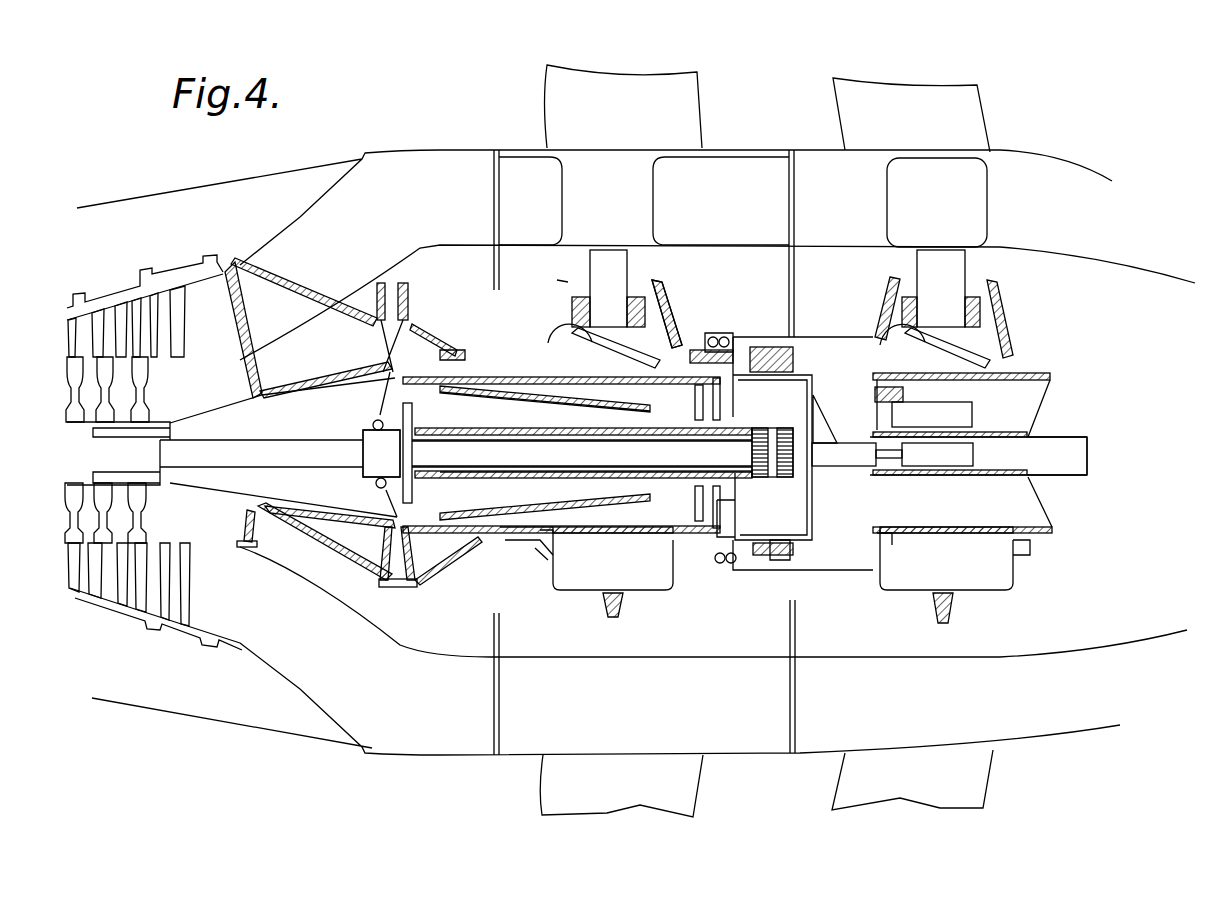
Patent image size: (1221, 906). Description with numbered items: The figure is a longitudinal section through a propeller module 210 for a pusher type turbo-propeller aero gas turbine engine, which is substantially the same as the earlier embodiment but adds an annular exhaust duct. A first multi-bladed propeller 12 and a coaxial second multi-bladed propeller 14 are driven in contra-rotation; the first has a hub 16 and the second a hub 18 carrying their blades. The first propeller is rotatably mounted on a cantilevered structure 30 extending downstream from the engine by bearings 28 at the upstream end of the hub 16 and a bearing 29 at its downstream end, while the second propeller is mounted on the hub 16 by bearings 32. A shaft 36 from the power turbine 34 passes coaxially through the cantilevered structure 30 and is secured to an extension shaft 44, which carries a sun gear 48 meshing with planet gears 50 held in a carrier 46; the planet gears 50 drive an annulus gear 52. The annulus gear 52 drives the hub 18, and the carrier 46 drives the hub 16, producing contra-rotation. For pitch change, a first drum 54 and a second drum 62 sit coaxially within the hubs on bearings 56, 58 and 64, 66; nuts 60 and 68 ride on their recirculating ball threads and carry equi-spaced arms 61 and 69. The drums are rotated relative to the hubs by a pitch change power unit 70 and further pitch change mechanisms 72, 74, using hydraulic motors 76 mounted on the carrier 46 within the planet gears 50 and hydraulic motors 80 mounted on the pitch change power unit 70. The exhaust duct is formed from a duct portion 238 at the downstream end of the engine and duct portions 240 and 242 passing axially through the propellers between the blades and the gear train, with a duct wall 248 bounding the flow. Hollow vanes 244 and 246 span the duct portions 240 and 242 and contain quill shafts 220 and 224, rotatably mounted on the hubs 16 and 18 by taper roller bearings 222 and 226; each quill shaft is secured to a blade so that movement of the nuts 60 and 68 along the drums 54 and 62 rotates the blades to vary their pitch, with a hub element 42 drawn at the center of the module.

The propeller module 210 is at (378, 130).
The first multi-bladed propeller 12 is at (630, 133).
The second multi-bladed propeller 14 is at (928, 133).
The hollow vane 244 is at (630, 215).
The duct portion 240 is at (751, 215).
The hollow vane 246 is at (971, 215).
The duct portion 242 is at (1107, 252).
The duct portion 238 is at (345, 265).
The duct wall 248 is at (1133, 652).
The quill shaft 220 is at (598, 270).
The taper roller bearing 222 is at (637, 357).
The quill shaft 224 is at (957, 277).
The taper roller bearing 226 is at (903, 312).
The power turbine 34 is at (140, 308).
The shaft 36 is at (188, 462).
The bearings 28 is at (455, 350).
The hub 16 is at (512, 352).
The cantilevered structure 30 is at (350, 388).
The extension shaft 44 is at (503, 452).
The bearing 29 is at (650, 413).
The carrier 46 is at (557, 478).
The hub 42 is at (373, 480).
The nut 60 is at (633, 353).
The arms 61 is at (657, 327).
The bearings 32 is at (705, 337).
The hydraulic motors 76 is at (770, 397).
The planet gears 50 is at (790, 407).
The sun gear 48 is at (763, 483).
The pitch change mechanism 72 is at (852, 478).
The pitch change mechanism 74 is at (928, 484).
The pitch change power unit 70 is at (1078, 468).
The hydraulic motors 80 is at (965, 418).
The hub 18 is at (1023, 358).
The nut 68 is at (1017, 355).
The arms 69 is at (988, 320).
The bearing 58 is at (683, 546).
The first drum 54 is at (568, 553).
The bearing 56 is at (540, 550).
The annulus gear 52 is at (787, 550).
The second drum 62 is at (927, 535).
The bearing 64 is at (893, 535).
The bearing 66 is at (1022, 548).